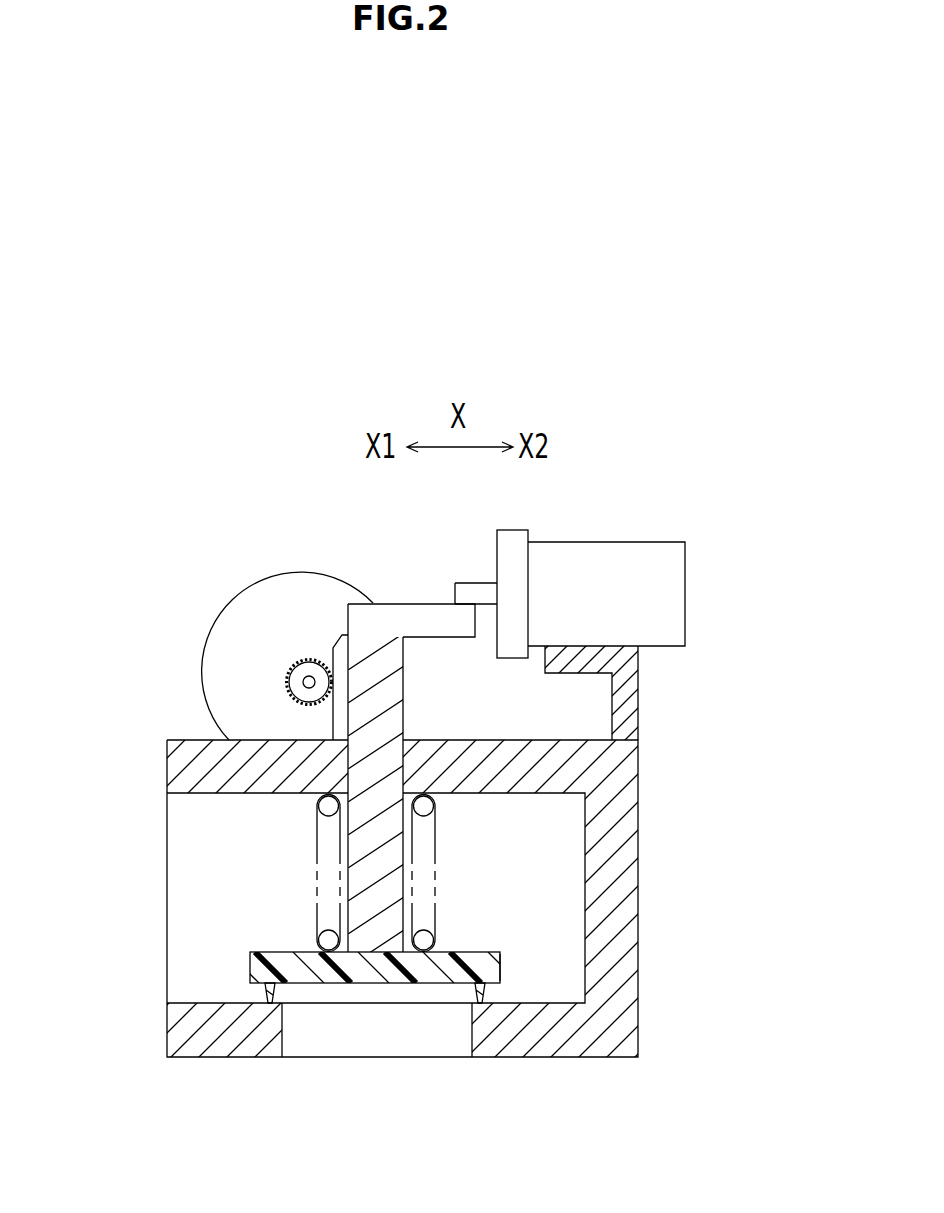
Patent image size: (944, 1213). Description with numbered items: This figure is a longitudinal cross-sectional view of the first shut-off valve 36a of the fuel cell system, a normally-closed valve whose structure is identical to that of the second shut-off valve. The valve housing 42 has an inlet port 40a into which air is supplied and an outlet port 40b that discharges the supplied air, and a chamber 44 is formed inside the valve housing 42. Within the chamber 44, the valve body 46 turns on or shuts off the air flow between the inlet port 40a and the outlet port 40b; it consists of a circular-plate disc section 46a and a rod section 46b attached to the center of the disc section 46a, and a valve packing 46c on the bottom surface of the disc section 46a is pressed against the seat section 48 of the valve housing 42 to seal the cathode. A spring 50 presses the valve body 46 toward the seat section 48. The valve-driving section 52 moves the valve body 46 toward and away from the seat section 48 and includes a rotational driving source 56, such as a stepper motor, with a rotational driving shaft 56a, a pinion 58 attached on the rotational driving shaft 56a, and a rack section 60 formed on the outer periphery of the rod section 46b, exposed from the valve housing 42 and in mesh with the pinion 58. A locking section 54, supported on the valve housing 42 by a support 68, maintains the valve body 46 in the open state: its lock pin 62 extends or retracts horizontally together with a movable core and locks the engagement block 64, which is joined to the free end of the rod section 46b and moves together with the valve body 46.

The first shut-off valve 36a is at (456, 348).
The valve housing 42 is at (638, 883).
The chamber 44 is at (376, 898).
The inlet port 40a is at (210, 1003).
The outlet port 40b is at (472, 1023).
The seat section 48 is at (294, 1003).
The valve-driving section 52 is at (268, 585).
The engagement block 64 is at (407, 603).
The lock pin 62 is at (475, 583).
The locking section 54 is at (688, 593).
The support 68 is at (638, 688).
The rack section 60 is at (342, 648).
The rotational driving source 56 is at (242, 603).
The pinion 58 is at (293, 673).
The rotational driving shaft 56a is at (303, 688).
The spring 50 is at (434, 803).
The valve body 46 is at (462, 948).
The disc section 46a is at (500, 960).
The rod section 46b is at (360, 852).
The valve packing 46c is at (483, 997).